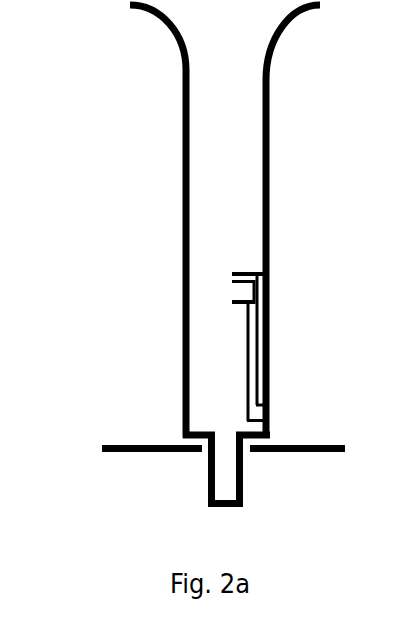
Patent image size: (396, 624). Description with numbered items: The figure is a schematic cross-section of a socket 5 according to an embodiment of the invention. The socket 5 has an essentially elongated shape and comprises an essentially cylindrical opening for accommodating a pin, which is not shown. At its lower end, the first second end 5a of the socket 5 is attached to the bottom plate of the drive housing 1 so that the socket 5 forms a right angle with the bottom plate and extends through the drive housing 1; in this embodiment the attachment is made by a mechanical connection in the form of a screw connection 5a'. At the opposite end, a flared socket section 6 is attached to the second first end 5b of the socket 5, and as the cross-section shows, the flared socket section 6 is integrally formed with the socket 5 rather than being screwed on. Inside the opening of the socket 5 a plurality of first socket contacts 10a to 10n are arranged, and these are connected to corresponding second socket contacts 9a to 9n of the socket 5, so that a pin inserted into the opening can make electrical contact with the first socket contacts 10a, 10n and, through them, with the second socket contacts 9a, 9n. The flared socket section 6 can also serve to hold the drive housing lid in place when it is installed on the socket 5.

The drive housing 1 is at (113, 422).
The socket 5 is at (168, 137).
The first second end of the socket 5a is at (140, 344).
The screw connection 5a' is at (176, 481).
The second first end of the socket 5b is at (132, 70).
The flared socket section 6 is at (296, 55).
The second socket contact 9a is at (272, 405).
The second socket contact 9n is at (268, 420).
The first socket contact 10a is at (256, 268).
The first socket contact 10n is at (259, 299).